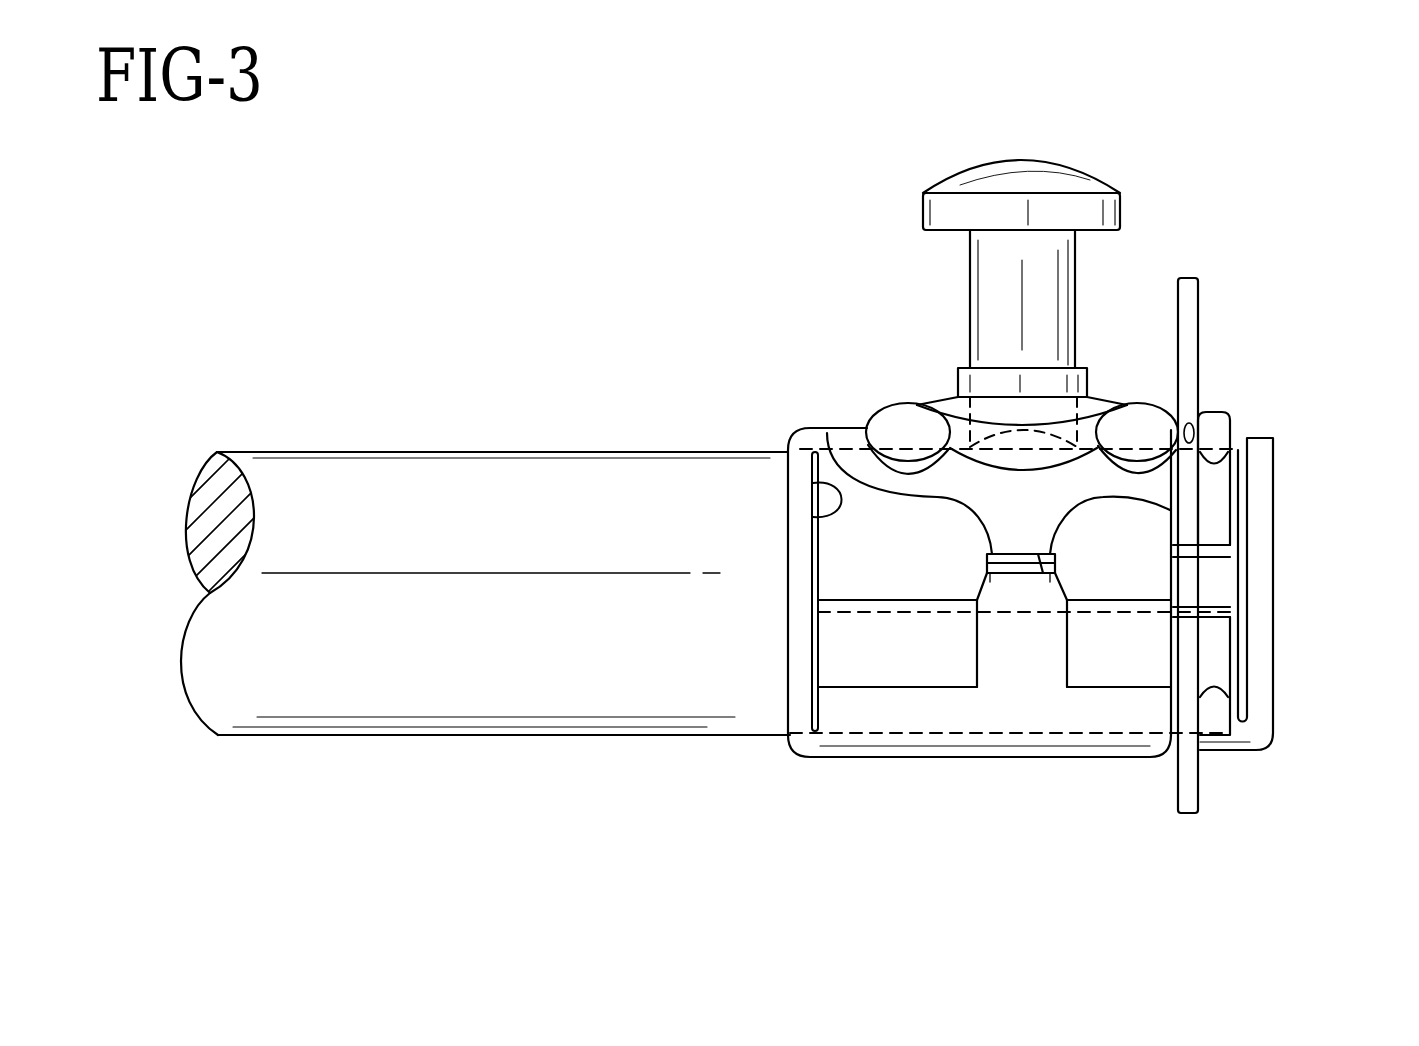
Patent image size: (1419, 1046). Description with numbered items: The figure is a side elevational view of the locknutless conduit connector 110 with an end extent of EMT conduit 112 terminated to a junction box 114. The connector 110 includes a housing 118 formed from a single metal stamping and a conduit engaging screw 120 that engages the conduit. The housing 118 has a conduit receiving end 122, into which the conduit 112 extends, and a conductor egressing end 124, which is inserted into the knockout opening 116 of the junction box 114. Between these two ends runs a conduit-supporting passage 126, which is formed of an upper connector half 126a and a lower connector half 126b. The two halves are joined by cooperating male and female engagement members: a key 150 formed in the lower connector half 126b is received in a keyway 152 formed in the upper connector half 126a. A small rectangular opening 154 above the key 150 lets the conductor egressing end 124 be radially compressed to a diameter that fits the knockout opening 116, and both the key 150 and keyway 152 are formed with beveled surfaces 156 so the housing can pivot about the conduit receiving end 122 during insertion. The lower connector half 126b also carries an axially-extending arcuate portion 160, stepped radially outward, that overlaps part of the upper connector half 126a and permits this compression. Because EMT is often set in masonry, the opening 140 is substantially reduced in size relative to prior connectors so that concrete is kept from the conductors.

The locknutless conduit connector 110 is at (705, 246).
The tubular member 112 is at (322, 440).
The junction box 114 is at (1199, 296).
The knockout opening 116 is at (1189, 438).
The housing 118 is at (884, 384).
The conduit engaging screw 120 is at (952, 248).
The conduit receiving end 122 is at (817, 688).
The conductor egressing end 124 is at (1282, 752).
The conduit-supporting passage 126 is at (1059, 773).
The upper connector half 126a is at (845, 562).
The lower connector half 126b is at (837, 665).
The opening 140 is at (810, 518).
The key 150 is at (1047, 645).
The keyway 152 is at (827, 433).
The small rectangular opening 154 is at (1170, 510).
The beveled surfaces 156 is at (1057, 583).
The arcuate portion 160 is at (838, 630).